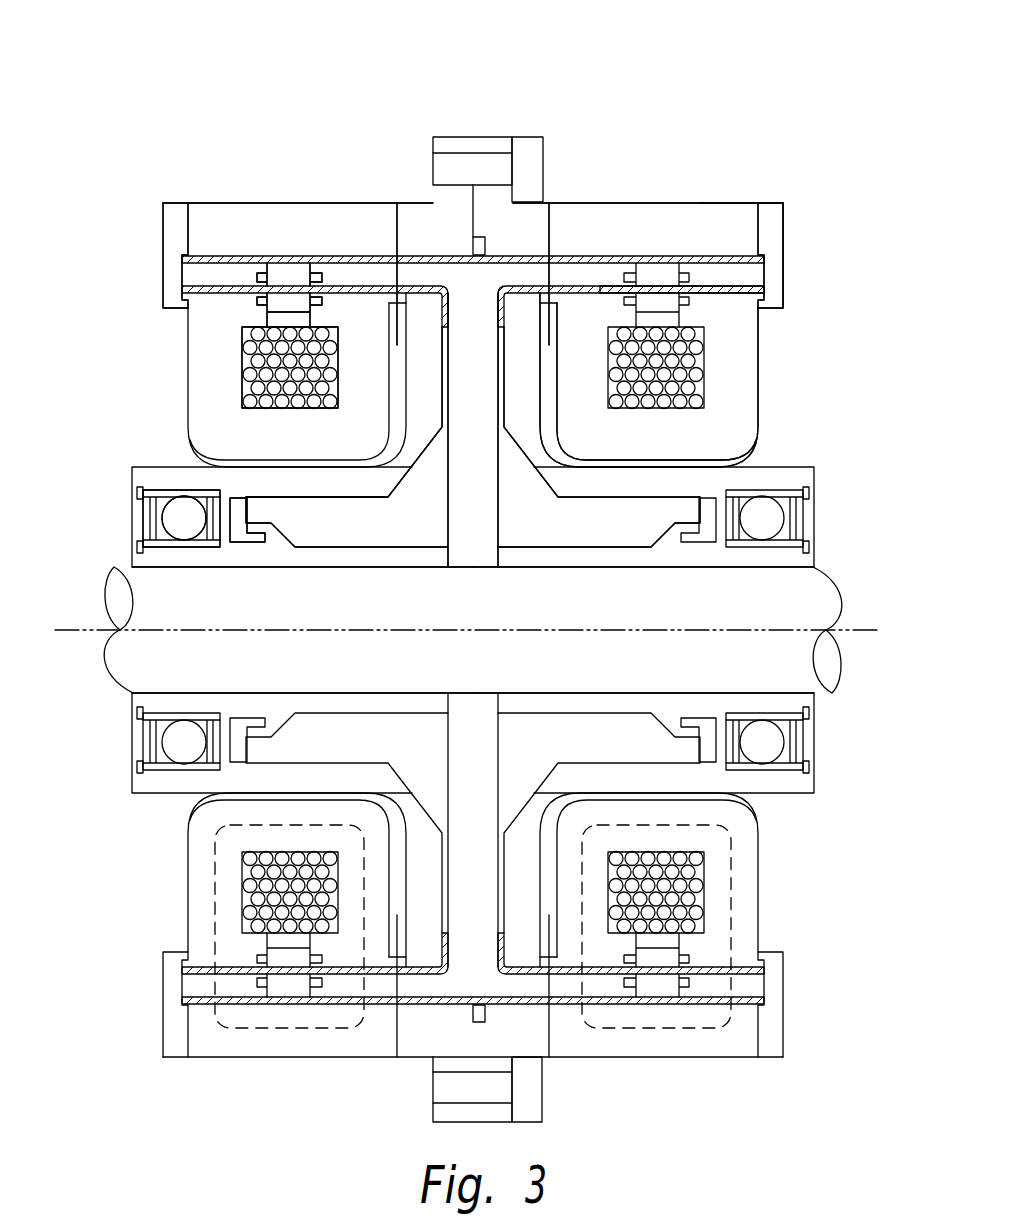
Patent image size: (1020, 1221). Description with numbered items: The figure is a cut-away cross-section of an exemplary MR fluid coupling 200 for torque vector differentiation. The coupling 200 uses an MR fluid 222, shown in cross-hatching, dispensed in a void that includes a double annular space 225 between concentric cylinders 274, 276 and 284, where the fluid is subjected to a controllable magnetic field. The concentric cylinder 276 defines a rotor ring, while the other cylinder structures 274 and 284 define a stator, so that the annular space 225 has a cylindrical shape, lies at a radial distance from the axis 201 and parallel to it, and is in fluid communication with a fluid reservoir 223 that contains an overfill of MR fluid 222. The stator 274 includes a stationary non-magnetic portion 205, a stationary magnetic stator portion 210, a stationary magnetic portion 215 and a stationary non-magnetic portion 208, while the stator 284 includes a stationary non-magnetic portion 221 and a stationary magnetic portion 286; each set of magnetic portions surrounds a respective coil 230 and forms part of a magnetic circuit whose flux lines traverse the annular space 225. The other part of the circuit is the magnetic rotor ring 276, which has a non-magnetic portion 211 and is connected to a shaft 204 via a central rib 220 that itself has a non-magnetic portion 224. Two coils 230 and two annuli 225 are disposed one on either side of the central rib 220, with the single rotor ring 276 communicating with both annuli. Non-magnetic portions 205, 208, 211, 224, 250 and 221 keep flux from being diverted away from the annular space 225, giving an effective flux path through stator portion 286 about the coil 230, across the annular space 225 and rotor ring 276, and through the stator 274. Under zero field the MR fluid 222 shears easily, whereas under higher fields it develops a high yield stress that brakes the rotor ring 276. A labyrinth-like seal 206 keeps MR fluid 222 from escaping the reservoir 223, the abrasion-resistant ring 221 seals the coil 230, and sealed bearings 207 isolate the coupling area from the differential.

The MR fluid coupling 200 is at (528, 96).
The axis 201 is at (853, 632).
The shaft 204 is at (837, 592).
The stationary non-magnetic portion 205 is at (524, 236).
The labyrinth-like seal 206 is at (241, 547).
The sealed bearings 207 is at (143, 520).
The stationary non-magnetic portion 208 is at (163, 238).
The stationary magnetic stator portion 210 is at (663, 202).
The non-magnetic portion 211 is at (257, 277).
The stationary magnetic portion 215 is at (237, 202).
The central rib 220 is at (440, 512).
The stationary non-magnetic portion 221 is at (257, 300).
The MR fluid 222 is at (505, 293).
The fluid reservoir 223 is at (604, 528).
The non-magnetic portion 224 is at (476, 284).
The annular space 225 is at (760, 268).
The coil 230 is at (242, 378).
The non-magnetic portion 250 is at (337, 497).
The stator 274 is at (738, 203).
The rotor ring 276 is at (752, 282).
The stator 284 is at (766, 363).
The stationary magnetic portion 286 is at (757, 417).